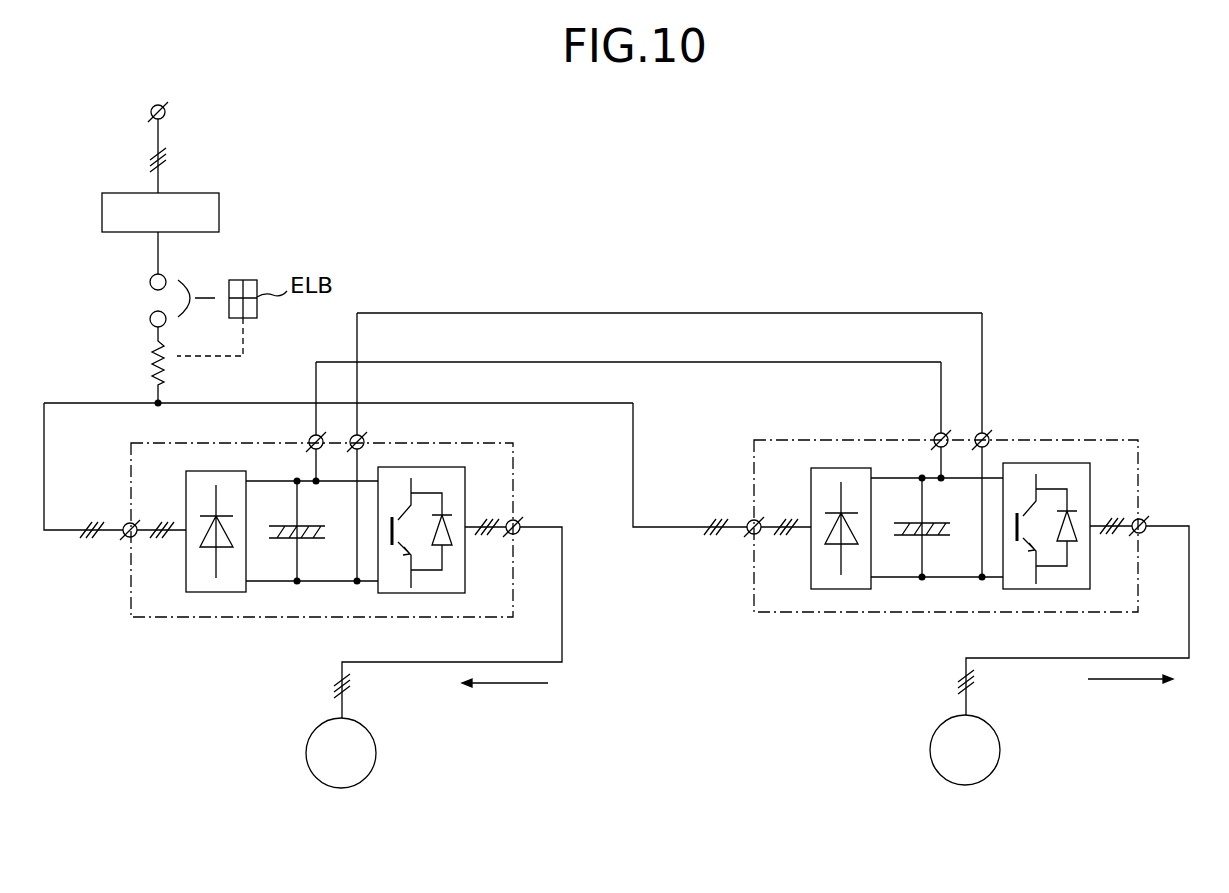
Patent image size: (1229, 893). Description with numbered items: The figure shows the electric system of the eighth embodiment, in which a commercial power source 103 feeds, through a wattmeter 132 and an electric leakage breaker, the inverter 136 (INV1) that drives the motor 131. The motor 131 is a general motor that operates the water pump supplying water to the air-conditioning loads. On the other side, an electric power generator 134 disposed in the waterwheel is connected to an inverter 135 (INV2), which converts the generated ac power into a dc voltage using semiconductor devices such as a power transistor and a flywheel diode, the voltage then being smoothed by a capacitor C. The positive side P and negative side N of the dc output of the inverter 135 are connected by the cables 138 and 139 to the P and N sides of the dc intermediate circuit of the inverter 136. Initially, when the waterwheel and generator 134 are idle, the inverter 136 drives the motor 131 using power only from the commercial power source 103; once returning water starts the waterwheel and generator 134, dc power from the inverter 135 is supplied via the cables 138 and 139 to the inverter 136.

The commercial power source 103 is at (166, 112).
The wattmeter 132 is at (219, 212).
The cable 138 is at (699, 312).
The cable 139 is at (699, 362).
The inverter (INV1) 136 is at (163, 617).
The inverter (INV2) 135 is at (1093, 440).
The motor 131 is at (376, 748).
The electric power generator 134 is at (1000, 745).